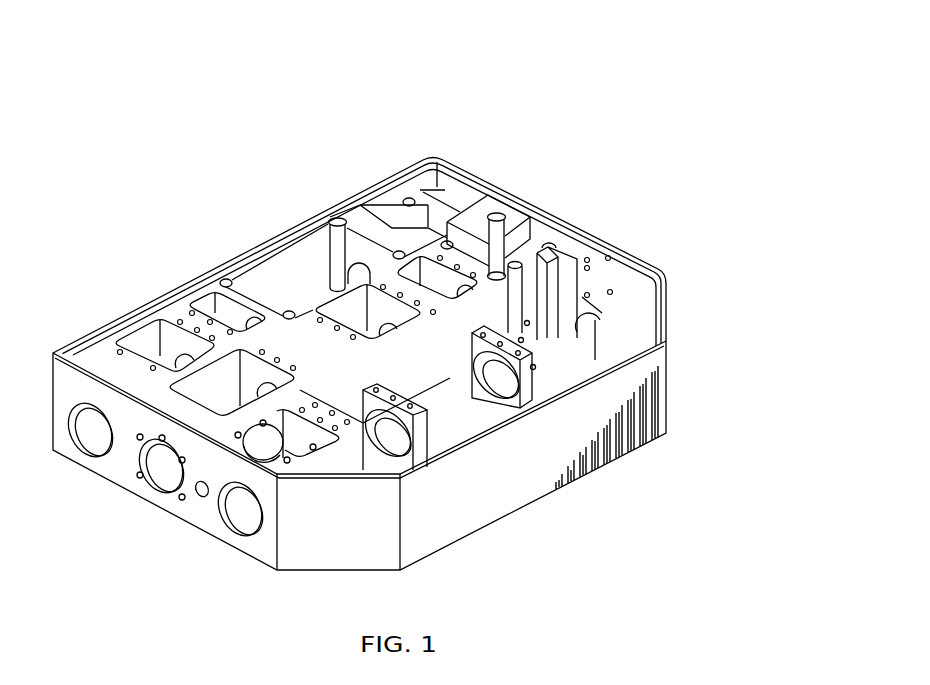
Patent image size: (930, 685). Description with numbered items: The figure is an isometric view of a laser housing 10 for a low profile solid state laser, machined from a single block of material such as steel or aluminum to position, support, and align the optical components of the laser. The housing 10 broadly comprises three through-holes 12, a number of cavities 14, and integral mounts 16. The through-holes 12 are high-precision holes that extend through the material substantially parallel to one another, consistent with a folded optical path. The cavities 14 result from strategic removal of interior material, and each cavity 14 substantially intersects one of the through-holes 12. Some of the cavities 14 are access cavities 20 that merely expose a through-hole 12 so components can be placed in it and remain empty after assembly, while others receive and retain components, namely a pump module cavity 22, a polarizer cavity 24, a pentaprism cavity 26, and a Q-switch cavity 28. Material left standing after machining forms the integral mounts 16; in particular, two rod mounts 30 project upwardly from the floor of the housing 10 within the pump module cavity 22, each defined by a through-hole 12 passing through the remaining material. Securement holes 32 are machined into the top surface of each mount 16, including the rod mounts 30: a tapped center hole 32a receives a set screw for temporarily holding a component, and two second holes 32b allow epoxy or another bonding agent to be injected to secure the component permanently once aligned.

The laser housing 10 is at (650, 118).
The through-holes 12 is at (240, 508).
The cavities 14 is at (155, 348).
The integral mounts 16 is at (487, 420).
The access cavities 20 is at (232, 316).
The pump module cavity 22 is at (443, 424).
The polarizer cavity 24 is at (510, 238).
The pentaprism cavity 26 is at (430, 208).
The Q-switch cavity 28 is at (298, 270).
The rod mounts 30 is at (440, 443).
The securement holes 32 is at (530, 322).
The center hole 32a is at (524, 339).
The second holes 32b is at (536, 366).